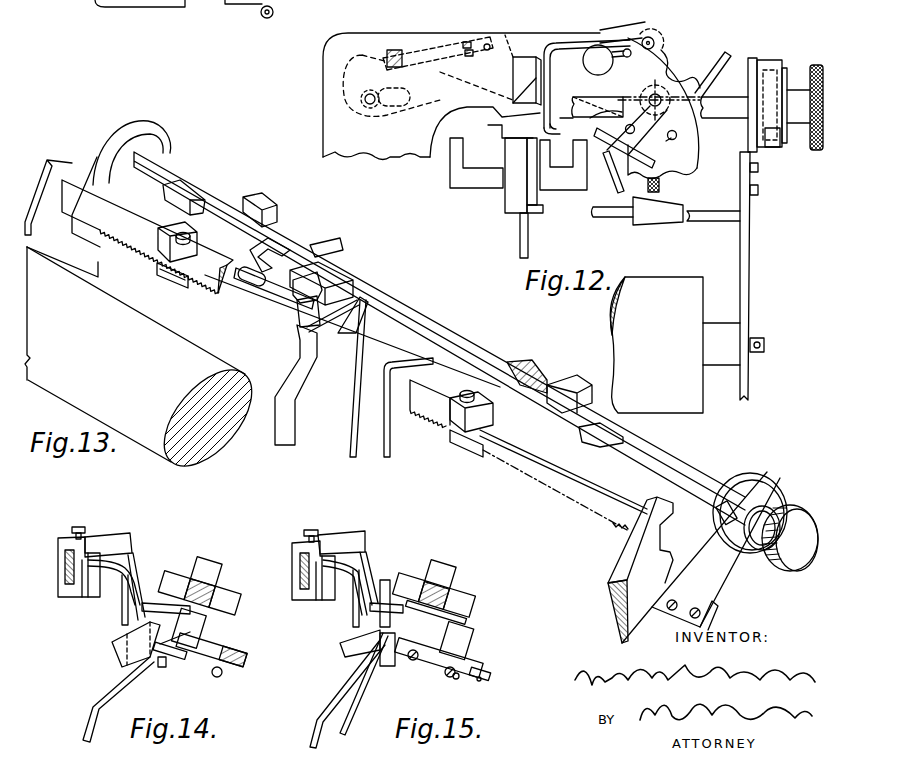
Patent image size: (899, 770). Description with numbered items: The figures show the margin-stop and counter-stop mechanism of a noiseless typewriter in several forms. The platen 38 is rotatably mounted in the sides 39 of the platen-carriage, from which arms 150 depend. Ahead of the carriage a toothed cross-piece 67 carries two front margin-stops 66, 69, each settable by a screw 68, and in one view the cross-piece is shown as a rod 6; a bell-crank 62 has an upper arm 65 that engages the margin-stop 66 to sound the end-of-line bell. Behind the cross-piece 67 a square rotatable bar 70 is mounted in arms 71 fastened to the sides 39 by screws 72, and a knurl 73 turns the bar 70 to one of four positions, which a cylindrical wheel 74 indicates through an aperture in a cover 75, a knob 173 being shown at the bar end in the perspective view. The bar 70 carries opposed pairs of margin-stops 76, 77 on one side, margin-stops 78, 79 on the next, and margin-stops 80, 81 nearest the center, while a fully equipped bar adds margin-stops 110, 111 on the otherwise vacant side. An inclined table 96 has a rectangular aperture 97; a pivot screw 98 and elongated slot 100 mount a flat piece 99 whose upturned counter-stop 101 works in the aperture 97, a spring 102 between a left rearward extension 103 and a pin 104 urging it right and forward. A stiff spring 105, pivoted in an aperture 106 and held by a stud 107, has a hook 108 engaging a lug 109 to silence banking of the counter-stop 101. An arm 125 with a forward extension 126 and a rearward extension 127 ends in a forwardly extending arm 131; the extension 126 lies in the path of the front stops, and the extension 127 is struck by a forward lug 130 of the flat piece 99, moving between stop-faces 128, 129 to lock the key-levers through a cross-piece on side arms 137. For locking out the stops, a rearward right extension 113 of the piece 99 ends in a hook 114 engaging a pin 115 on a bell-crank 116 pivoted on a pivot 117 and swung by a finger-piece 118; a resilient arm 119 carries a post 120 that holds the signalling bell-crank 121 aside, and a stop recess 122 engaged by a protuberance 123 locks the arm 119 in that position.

In FIG. 12, the rod 6 is at (600, 220).
In FIG. 12, the platen 38 is at (700, 298).
In FIG. 13, the platen 38 is at (222, 461).
In FIG. 12, the sides of the platen-carriage 39 is at (750, 305).
In FIG. 13, the sides of the platen-carriage 39 is at (53, 160).
In FIG. 13, the bell-crank 62 is at (351, 438).
In FIG. 14, the bell-crank 62 is at (122, 613).
In FIG. 15, the bell-crank 62 is at (353, 613).
In FIG. 12, the upper arm 65 is at (617, 196).
In FIG. 13, the upper arm 65 is at (326, 332).
In FIG. 14, the upper arm 65 is at (107, 572).
In FIG. 15, the upper arm 65 is at (341, 576).
In FIG. 12, the margin-stop 66 is at (672, 225).
In FIG. 13, the margin-stop 66 is at (447, 410).
In FIG. 13, the toothed cross-piece 67 is at (516, 455).
In FIG. 14, the toothed cross-piece 67 is at (58, 572).
In FIG. 15, the toothed cross-piece 67 is at (293, 572).
In FIG. 13, the screw 68 is at (195, 236).
In FIG. 14, the screw 68 is at (79, 527).
In FIG. 15, the screw 68 is at (313, 530).
In FIG. 13, the margin-stop 69 is at (170, 228).
In FIG. 14, the margin-stop 69 is at (85, 597).
In FIG. 15, the margin-stop 69 is at (320, 598).
In FIG. 12, the rotatable bar 70 is at (713, 118).
In FIG. 13, the rotatable bar 70 is at (692, 475).
In FIG. 14, the rotatable bar 70 is at (216, 592).
In FIG. 15, the rotatable bar 70 is at (449, 592).
In FIG. 12, the arms 71 is at (748, 80).
In FIG. 13, the arms 71 is at (123, 134).
In FIG. 12, the screws 72 is at (760, 176).
In FIG. 12, the knurl 73 is at (814, 150).
In FIG. 12, the cylindrical wheel 74 is at (787, 75).
In FIG. 13, the cylindrical wheel 74 is at (752, 547).
In FIG. 12, the cover 75 is at (775, 57).
In FIG. 13, the cover 75 is at (768, 486).
In FIG. 13, the margin-stop 76 is at (585, 443).
In FIG. 13, the margin-stop 77 is at (191, 190).
In FIG. 14, the margin-stop 77 is at (182, 583).
In FIG. 15, the margin-stop 77 is at (421, 586).
In FIG. 13, the margin-stop 78 is at (567, 387).
In FIG. 13, the margin-stop 79 is at (268, 205).
In FIG. 14, the margin-stop 79 is at (218, 561).
In FIG. 15, the margin-stop 79 is at (452, 561).
In FIG. 13, the margin-stop 80 is at (522, 364).
In FIG. 13, the margin-stop 81 is at (337, 248).
In FIG. 14, the margin-stop 81 is at (230, 606).
In FIG. 15, the margin-stop 81 is at (465, 602).
In FIG. 12, the inclined table 96 is at (352, 36).
In FIG. 14, the inclined table 96 is at (248, 660).
In FIG. 15, the inclined table 96 is at (488, 656).
In FIG. 12, the aperture 97 is at (518, 55).
In FIG. 12, the pivot screw 98 is at (372, 105).
In FIG. 14, the pivot screw 98 is at (175, 661).
In FIG. 12, the flat piece 99 is at (449, 110).
In FIG. 13, the flat piece 99 is at (268, 299).
In FIG. 14, the flat piece 99 is at (198, 658).
In FIG. 12, the elongated slot 100 is at (411, 96).
In FIG. 13, the elongated slot 100 is at (252, 285).
In FIG. 12, the counter-stop 101 is at (513, 81).
In FIG. 13, the counter-stop 101 is at (358, 333).
In FIG. 14, the counter-stop 101 is at (212, 640).
In FIG. 15, the counter-stop 101 is at (462, 643).
In FIG. 12, the spring 102 is at (396, 50).
In FIG. 14, the spring 102 is at (221, 676).
In FIG. 15, the spring 102 is at (455, 680).
In FIG. 12, the left rearward extension 103 is at (358, 66).
In FIG. 12, the pin 104 is at (488, 43).
In FIG. 12, the stiff spring 105 is at (551, 76).
In FIG. 12, the aperture 106 is at (626, 58).
In FIG. 12, the stud 107 is at (596, 45).
In FIG. 12, the hook 108 is at (563, 107).
In FIG. 12, the lug 109 is at (556, 130).
In FIG. 12, the margin-stop 110 is at (598, 97).
In FIG. 15, the margin-stop 111 is at (468, 616).
In FIG. 12, the rearward right extension 113 is at (632, 30).
In FIG. 12, the hook 114 is at (661, 36).
In FIG. 15, the hook 114 is at (491, 672).
In FIG. 12, the pin 115 is at (650, 36).
In FIG. 15, the pin 115 is at (481, 680).
In FIG. 12, the bell-crank 116 is at (672, 63).
In FIG. 12, the pivot 117 is at (655, 94).
In FIG. 15, the pivot 117 is at (447, 676).
In FIG. 12, the finger-piece 118 is at (726, 52).
In FIG. 12, the resilient arm 119 is at (635, 134).
In FIG. 15, the resilient arm 119 is at (346, 641).
In FIG. 12, the post 120 is at (613, 178).
In FIG. 15, the post 120 is at (397, 602).
In FIG. 12, the signalling bell-crank 121 is at (603, 132).
In FIG. 13, the signalling bell-crank 121 is at (418, 360).
In FIG. 14, the signalling bell-crank 121 is at (152, 596).
In FIG. 15, the signalling bell-crank 121 is at (381, 600).
In FIG. 12, the stop recess 122 is at (668, 142).
In FIG. 15, the stop recess 122 is at (411, 661).
In FIG. 12, the protuberance 123 is at (650, 131).
In FIG. 12, the arm 125 is at (505, 203).
In FIG. 13, the arm 125 is at (295, 427).
In FIG. 14, the arm 125 is at (95, 700).
In FIG. 15, the arm 125 is at (342, 693).
In FIG. 12, the forward right-angled extension 126 is at (543, 197).
In FIG. 13, the forward right-angled extension 126 is at (297, 312).
In FIG. 14, the forward right-angled extension 126 is at (124, 536).
In FIG. 15, the forward right-angled extension 126 is at (359, 536).
In FIG. 12, the rearward right-angled extension 127 is at (476, 163).
In FIG. 14, the rearward right-angled extension 127 is at (143, 653).
In FIG. 15, the rearward right-angled extension 127 is at (386, 666).
In FIG. 12, the stop-face 128 is at (540, 180).
In FIG. 13, the stop-face 128 is at (342, 276).
In FIG. 12, the stop-face 129 is at (505, 178).
In FIG. 13, the stop-face 129 is at (293, 250).
In FIG. 12, the forward lug 130 is at (500, 131).
In FIG. 13, the forward lug 130 is at (300, 333).
In FIG. 14, the forward lug 130 is at (163, 668).
In FIG. 12, the forwardly extending arm 131 is at (520, 240).
In FIG. 12, the side arms 137 is at (262, 16).
In FIG. 13, the arms 150 is at (715, 608).
In FIG. 13, the knob 173 is at (780, 571).